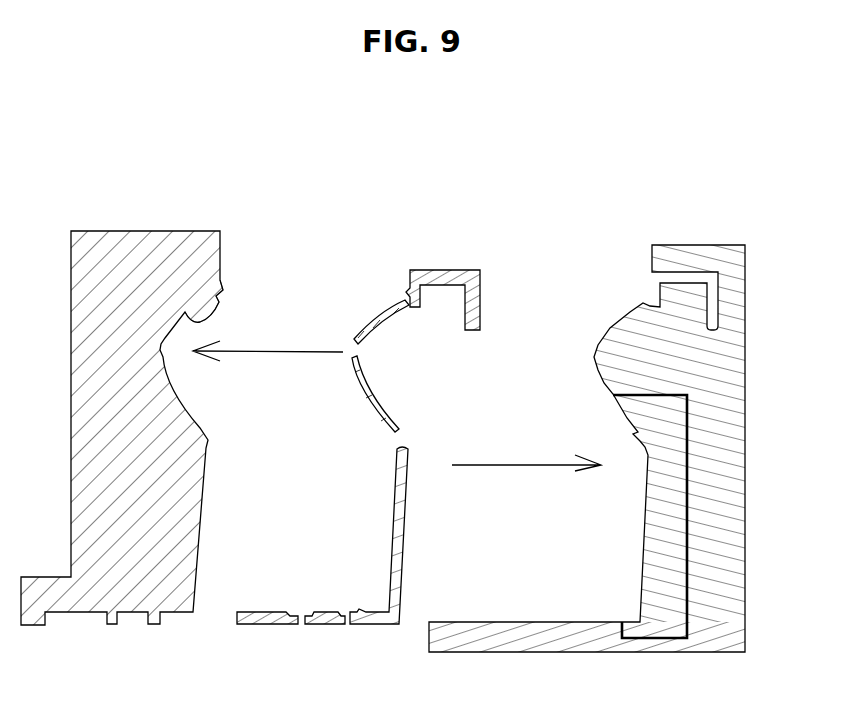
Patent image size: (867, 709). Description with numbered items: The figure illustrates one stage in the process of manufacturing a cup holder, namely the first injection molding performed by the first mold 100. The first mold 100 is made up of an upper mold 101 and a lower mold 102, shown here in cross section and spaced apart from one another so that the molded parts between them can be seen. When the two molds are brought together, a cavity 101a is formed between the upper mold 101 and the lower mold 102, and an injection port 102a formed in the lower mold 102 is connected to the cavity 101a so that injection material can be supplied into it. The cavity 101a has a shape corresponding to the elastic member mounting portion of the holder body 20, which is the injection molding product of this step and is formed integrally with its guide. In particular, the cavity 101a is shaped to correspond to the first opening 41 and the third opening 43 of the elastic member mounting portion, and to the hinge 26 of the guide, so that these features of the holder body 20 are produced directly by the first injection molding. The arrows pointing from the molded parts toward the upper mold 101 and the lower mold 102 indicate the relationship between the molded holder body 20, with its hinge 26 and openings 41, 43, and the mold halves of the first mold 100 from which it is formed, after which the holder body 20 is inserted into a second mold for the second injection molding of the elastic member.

The first mold 100 is at (503, 120).
The upper mold 101 is at (108, 234).
The cavity 101a is at (218, 307).
The lower mold 102 is at (742, 330).
The injection port 102a is at (656, 640).
The holder body 20 is at (429, 253).
The hinge 26 is at (406, 302).
The first opening 41 is at (348, 626).
The third opening 43 is at (404, 447).